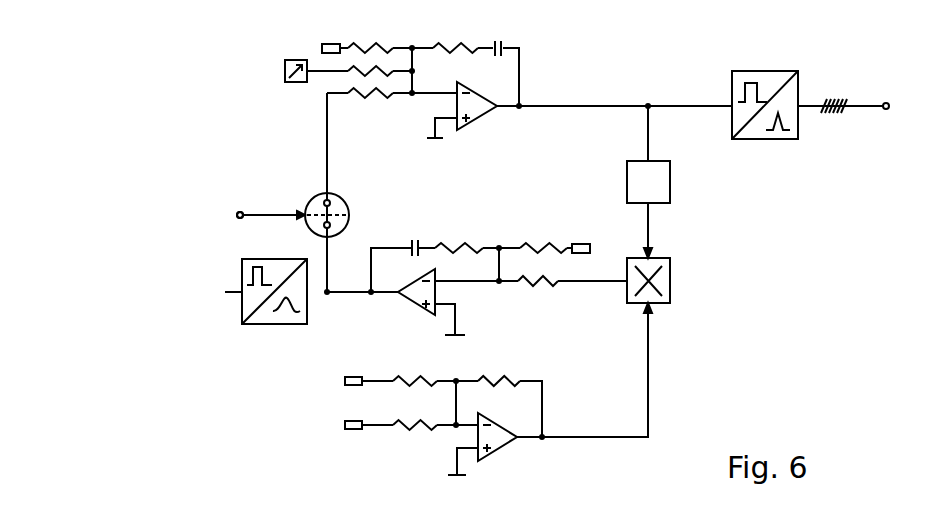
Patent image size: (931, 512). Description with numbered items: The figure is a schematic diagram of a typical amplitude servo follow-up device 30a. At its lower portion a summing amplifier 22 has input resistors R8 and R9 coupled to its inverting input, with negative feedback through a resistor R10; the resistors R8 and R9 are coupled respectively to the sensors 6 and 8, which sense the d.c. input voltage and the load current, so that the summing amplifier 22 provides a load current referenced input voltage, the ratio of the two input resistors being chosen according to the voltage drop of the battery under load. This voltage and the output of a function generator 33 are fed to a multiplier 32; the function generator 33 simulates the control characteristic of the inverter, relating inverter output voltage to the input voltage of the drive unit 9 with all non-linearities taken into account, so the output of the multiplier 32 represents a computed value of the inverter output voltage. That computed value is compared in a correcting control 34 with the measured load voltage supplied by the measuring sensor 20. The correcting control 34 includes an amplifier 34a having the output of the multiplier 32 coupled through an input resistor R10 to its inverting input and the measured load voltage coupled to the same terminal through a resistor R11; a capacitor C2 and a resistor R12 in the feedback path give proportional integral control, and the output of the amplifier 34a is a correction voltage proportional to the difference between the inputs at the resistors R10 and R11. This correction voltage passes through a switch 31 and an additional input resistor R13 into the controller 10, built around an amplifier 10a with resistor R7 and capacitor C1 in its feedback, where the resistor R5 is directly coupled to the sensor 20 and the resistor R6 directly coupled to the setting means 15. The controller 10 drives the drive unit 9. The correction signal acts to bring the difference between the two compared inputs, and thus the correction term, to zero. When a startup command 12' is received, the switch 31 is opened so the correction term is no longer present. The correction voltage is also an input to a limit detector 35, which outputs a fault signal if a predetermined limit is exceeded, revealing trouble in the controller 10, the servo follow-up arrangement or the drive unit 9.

The measuring sensor 20 is at (327, 43).
The resistor R5 is at (370, 42).
The resistor R7 is at (443, 42).
The capacitor C1 is at (503, 40).
The resistor R6 is at (388, 69).
The setting means 15 is at (285, 83).
The input resistor R13 is at (378, 98).
The controller 10 is at (474, 108).
The amplifier 10a is at (480, 118).
The drive unit 9 is at (798, 84).
The function generator 33 is at (670, 178).
The multiplier 32 is at (670, 283).
The amplitude servo follow-up device 30a is at (767, 297).
The switch 31 is at (343, 200).
The startup command 12' is at (222, 216).
The limit detector 35 is at (270, 326).
The capacitor C2 is at (411, 238).
The resistor R12 is at (457, 243).
The correcting control 34 is at (421, 299).
The amplifier 34a is at (408, 301).
The resistor R11 is at (558, 243).
The resistor R10 is at (526, 289).
The sensor 6 is at (345, 380).
The sensor 8 is at (345, 424).
The input resistor R8 is at (421, 370).
The input resistor R9 is at (406, 431).
The summing amplifier 22 is at (500, 449).